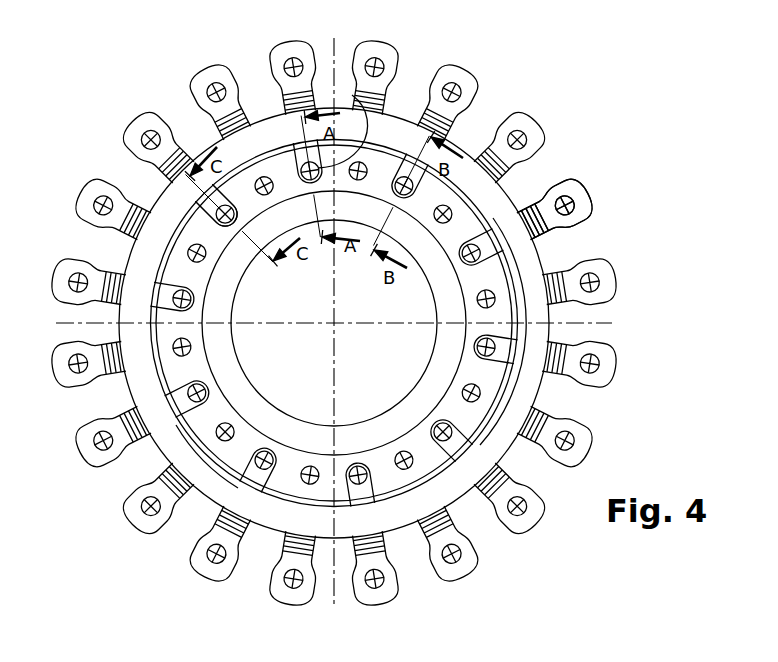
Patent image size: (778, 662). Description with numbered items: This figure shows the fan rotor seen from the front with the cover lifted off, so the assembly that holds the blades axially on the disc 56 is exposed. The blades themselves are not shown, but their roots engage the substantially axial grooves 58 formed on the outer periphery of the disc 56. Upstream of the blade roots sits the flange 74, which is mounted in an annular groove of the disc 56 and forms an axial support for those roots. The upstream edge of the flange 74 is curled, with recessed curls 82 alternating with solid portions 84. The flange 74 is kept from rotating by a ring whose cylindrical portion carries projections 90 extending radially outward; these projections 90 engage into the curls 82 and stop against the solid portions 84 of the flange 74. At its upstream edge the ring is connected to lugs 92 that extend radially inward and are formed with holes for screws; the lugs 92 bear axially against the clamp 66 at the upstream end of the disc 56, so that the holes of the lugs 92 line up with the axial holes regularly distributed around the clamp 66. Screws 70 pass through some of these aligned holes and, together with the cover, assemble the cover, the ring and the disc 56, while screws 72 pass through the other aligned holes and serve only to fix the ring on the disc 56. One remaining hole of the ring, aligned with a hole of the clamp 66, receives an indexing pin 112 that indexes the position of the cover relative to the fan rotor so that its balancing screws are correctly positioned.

The disc 56 is at (218, 302).
The axial grooves 58 is at (466, 148).
The clamp 66 is at (186, 274).
The screws 70 is at (352, 95).
The screws 72 is at (183, 218).
The flange 74 is at (264, 142).
The curls 82 is at (498, 242).
The solid portions 84 is at (510, 192).
The projections 90 is at (505, 410).
The lugs 92 is at (176, 424).
The indexing pin 112 is at (398, 152).